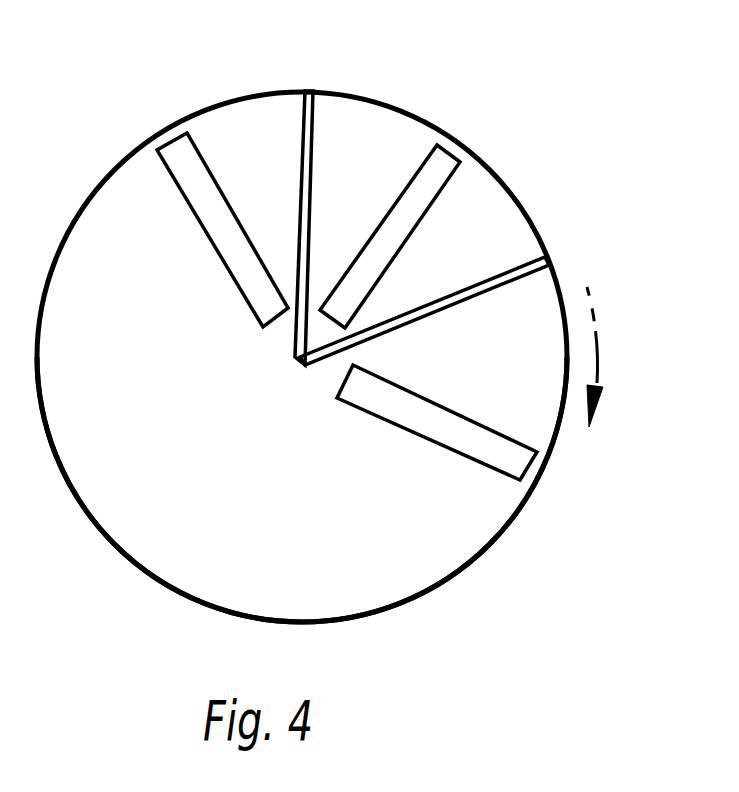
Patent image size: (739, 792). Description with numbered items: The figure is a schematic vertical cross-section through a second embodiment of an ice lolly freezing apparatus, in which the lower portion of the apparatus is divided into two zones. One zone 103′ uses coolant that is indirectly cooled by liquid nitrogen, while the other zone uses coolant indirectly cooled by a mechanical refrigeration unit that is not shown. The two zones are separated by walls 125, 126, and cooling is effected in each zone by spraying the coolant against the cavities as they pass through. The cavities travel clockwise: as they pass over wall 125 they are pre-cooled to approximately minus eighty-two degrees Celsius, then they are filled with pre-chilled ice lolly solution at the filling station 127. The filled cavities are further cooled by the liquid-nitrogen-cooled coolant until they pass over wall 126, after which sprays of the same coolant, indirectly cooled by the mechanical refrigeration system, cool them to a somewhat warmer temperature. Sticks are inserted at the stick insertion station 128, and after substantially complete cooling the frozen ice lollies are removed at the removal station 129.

The zone 103′ is at (346, 163).
The wall 125 is at (305, 130).
The wall 126 is at (498, 277).
The filling station 127 is at (440, 167).
The stick insertion station 128 is at (512, 457).
The removal station 129 is at (190, 180).